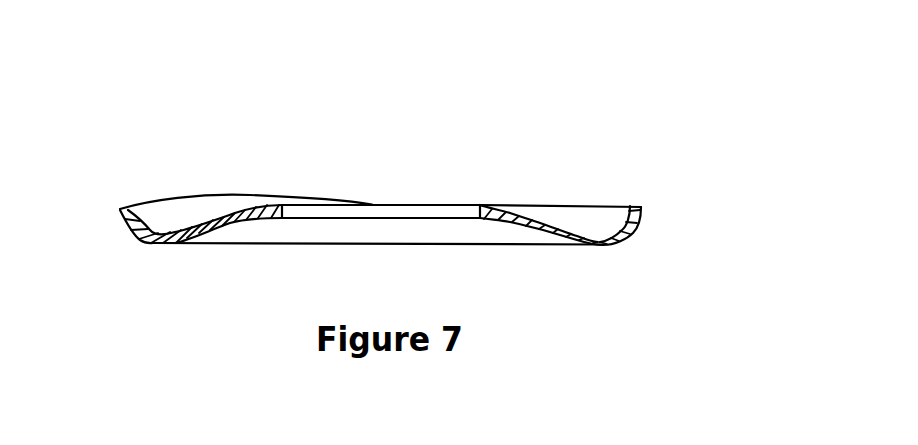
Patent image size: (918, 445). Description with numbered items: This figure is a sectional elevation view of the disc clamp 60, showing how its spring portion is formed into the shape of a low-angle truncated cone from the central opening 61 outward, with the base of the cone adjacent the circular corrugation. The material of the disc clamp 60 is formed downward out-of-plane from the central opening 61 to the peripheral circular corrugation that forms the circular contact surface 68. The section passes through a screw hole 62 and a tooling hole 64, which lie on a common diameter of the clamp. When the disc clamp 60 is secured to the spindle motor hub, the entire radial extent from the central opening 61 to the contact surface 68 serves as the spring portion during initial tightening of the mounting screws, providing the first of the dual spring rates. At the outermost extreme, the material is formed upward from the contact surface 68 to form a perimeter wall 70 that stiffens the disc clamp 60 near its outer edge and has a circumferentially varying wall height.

The disc clamp 60 is at (442, 188).
The central opening 61 is at (380, 205).
The screw holes 62 is at (531, 208).
The tooling holes 64 is at (230, 212).
The circular contact surface 68 is at (220, 247).
The perimeter wall 70 is at (641, 225).